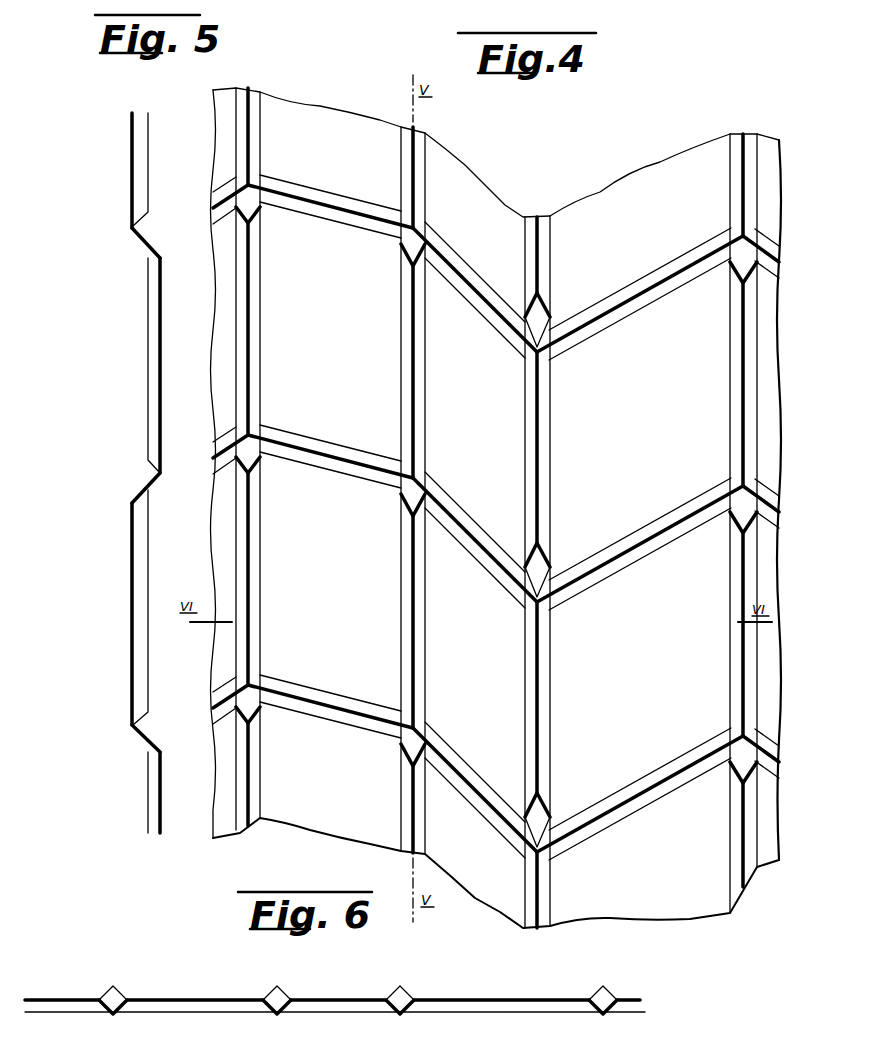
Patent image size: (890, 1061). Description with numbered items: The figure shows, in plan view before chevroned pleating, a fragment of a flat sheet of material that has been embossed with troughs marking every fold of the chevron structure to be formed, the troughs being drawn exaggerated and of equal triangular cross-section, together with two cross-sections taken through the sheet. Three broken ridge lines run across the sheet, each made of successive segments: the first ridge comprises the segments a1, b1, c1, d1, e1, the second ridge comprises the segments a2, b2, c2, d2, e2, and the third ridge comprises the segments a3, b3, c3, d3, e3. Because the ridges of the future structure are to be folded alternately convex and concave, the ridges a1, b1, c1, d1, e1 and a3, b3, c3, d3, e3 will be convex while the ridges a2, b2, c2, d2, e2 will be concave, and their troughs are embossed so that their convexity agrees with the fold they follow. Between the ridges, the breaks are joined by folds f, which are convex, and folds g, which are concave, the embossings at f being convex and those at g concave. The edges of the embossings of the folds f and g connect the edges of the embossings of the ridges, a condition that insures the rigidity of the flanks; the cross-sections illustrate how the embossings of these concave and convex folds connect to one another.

In FIG. 4, the ridge a1 is at (208, 190).
In FIG. 4, the ridge a2 is at (208, 430).
In FIG. 4, the ridge a3 is at (208, 698).
In FIG. 6, the ridge a3 is at (60, 1014).
In FIG. 4, the ridge b1 is at (340, 206).
In FIG. 5, the ridge b1 is at (131, 229).
In FIG. 4, the ridge b2 is at (340, 455).
In FIG. 5, the ridge b2 is at (161, 473).
In FIG. 4, the ridge b3 is at (340, 705).
In FIG. 5, the ridge b3 is at (131, 726).
In FIG. 6, the ridge b3 is at (207, 1014).
In FIG. 4, the ridge c1 is at (466, 280).
In FIG. 4, the ridge c2 is at (466, 530).
In FIG. 4, the ridge c3 is at (466, 775).
In FIG. 6, the ridge c3 is at (345, 1014).
In FIG. 4, the ridge d1 is at (636, 296).
In FIG. 4, the ridge d2 is at (636, 540).
In FIG. 4, the ridge d3 is at (636, 785).
In FIG. 6, the ridge d3 is at (513, 1014).
In FIG. 4, the ridge e1 is at (764, 240).
In FIG. 4, the ridge e2 is at (764, 490).
In FIG. 4, the ridge e3 is at (764, 732).
In FIG. 6, the ridge e3 is at (630, 1014).
In FIG. 4, the fold between ridges f is at (416, 190).
In FIG. 5, the fold between ridges f is at (131, 160).
In FIG. 6, the fold between ridges f is at (117, 1017).
In FIG. 4, the fold between ridges g is at (250, 141).
In FIG. 5, the fold between ridges g is at (162, 350).
In FIG. 6, the fold between ridges g is at (113, 986).